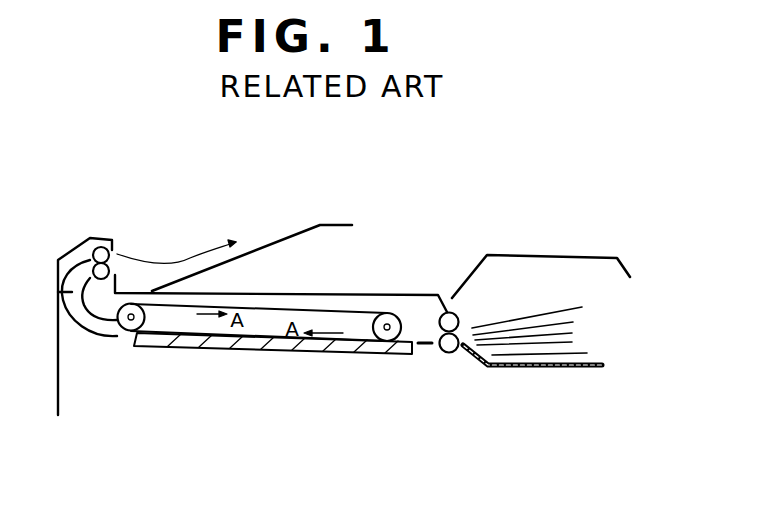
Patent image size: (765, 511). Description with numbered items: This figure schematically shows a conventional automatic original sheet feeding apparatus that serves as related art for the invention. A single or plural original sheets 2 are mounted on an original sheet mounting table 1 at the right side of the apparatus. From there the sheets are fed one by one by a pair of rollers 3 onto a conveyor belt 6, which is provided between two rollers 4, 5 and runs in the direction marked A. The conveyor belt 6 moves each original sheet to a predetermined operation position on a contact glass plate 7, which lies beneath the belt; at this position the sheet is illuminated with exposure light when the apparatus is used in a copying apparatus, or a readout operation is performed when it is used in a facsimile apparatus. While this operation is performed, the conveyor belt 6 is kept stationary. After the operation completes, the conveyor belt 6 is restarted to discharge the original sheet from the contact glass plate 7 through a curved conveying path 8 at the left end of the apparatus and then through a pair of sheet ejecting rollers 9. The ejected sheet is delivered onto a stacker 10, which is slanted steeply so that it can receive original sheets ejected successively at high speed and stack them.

The original sheet mounting table 1 is at (543, 368).
The original sheets 2 is at (618, 294).
The pair of rollers 3 is at (449, 353).
The roller 4 is at (130, 325).
The roller 5 is at (387, 355).
The conveyor belt 6 is at (365, 310).
The contact glass plate 7 is at (260, 353).
The conveying path 8 is at (72, 318).
The sheet ejecting rollers 9 is at (101, 245).
The stacker 10 is at (298, 232).